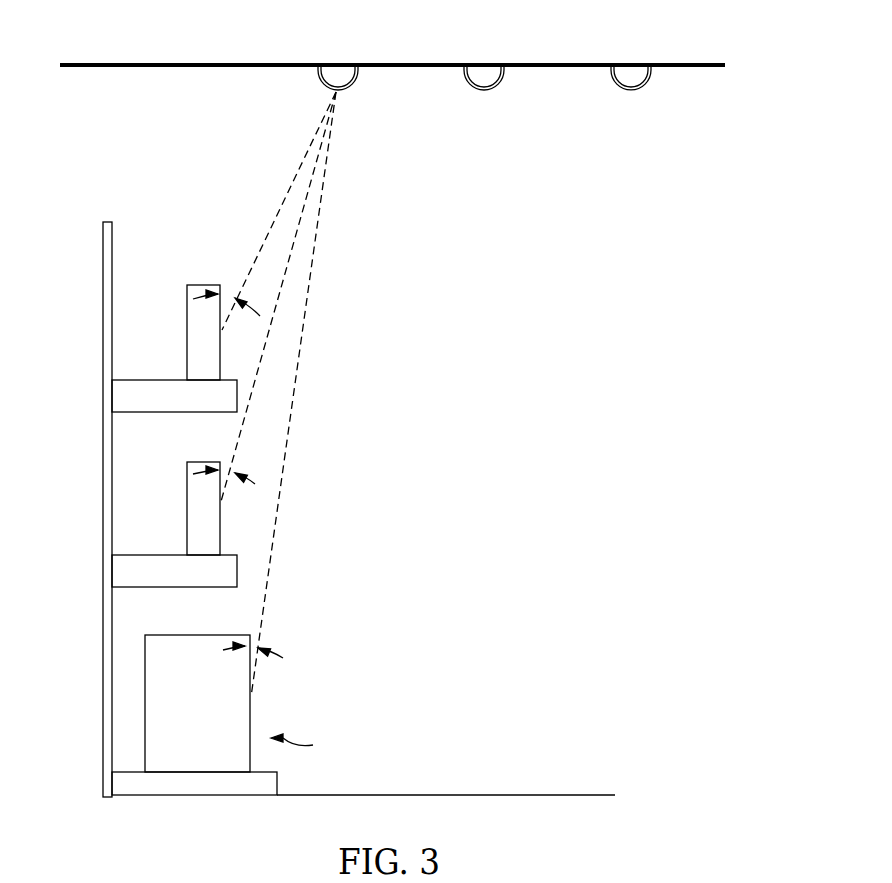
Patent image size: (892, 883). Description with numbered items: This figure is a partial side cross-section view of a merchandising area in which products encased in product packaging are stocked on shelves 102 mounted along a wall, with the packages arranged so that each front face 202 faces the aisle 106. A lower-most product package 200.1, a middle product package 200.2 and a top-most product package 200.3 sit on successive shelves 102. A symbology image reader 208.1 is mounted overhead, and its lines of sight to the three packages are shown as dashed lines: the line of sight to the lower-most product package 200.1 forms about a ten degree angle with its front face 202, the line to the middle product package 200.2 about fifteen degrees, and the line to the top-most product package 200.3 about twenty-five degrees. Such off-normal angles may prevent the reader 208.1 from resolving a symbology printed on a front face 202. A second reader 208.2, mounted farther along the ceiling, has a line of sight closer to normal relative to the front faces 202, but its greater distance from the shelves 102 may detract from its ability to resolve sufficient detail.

The symbology image reader 208.1 is at (341, 72).
The reader 208.2 is at (485, 72).
The top-most product package 200.3 is at (197, 284).
The middle product package 200.2 is at (197, 461).
The lower-most product package 200.1 is at (195, 634).
The shelves 102 is at (123, 397).
The aisle 106 is at (472, 571).
The front face 202 is at (310, 745).